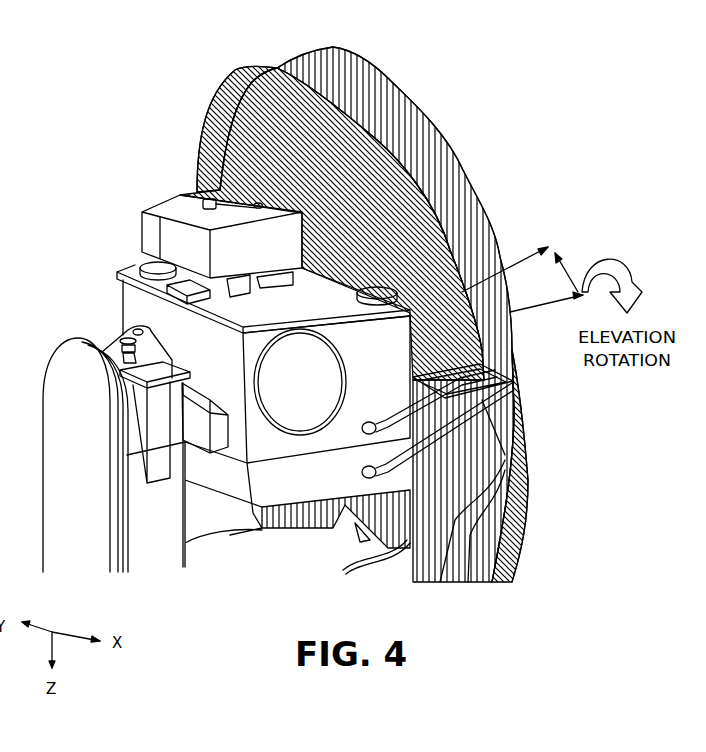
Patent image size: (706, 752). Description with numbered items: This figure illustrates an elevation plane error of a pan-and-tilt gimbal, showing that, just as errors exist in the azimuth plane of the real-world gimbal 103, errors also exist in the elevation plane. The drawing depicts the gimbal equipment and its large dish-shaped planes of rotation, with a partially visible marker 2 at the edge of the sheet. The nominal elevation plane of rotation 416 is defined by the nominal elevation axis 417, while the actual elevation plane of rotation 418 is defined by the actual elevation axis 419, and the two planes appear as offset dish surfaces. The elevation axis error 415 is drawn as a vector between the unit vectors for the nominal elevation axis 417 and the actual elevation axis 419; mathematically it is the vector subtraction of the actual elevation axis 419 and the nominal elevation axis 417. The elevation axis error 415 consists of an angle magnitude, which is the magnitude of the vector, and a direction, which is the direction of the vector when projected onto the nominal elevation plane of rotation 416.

The partial reference (cut off) 2 is at (7, 48).
The real-world gimbal 103 is at (67, 458).
The elevation axis error 415 is at (572, 268).
The nominal elevation plane of rotation 416 is at (445, 133).
The nominal elevation axis 417 is at (510, 312).
The actual elevation plane of rotation 418 is at (215, 92).
The actual elevation axis 419 is at (516, 253).